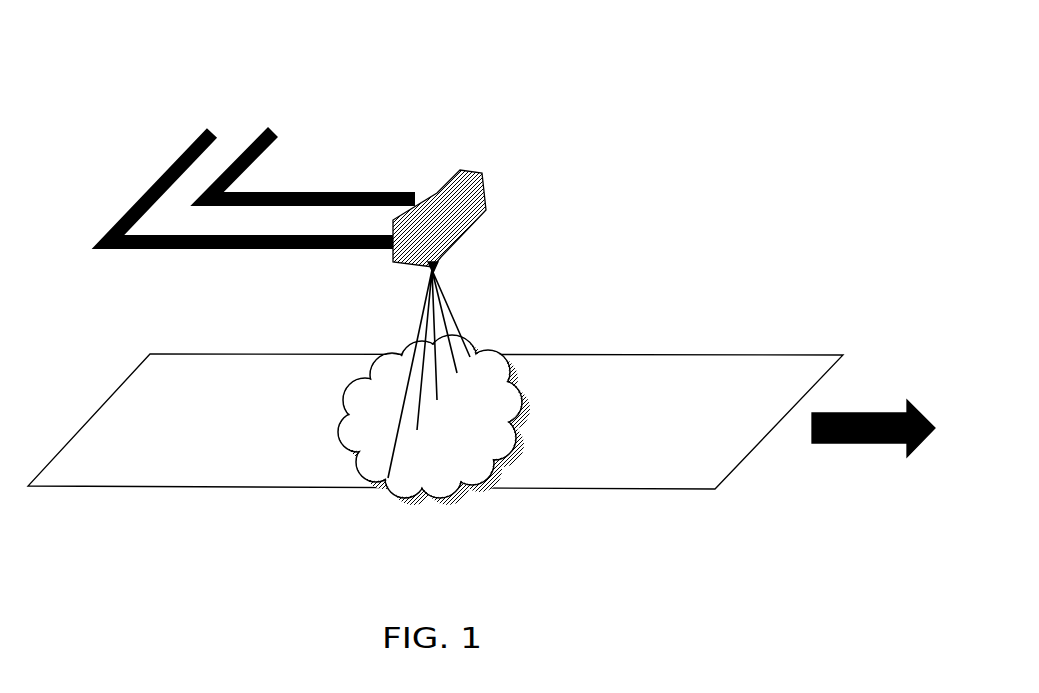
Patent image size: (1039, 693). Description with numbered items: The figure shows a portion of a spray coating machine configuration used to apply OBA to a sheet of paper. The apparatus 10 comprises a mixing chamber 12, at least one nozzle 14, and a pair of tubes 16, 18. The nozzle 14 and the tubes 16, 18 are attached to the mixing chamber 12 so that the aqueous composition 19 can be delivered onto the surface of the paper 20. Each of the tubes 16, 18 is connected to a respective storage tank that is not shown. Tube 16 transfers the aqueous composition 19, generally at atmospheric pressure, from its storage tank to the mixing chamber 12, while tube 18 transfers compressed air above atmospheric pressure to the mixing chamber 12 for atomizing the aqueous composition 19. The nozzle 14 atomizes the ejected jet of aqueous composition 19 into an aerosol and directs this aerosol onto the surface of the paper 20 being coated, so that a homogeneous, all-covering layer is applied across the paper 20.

The apparatus 10 is at (698, 167).
The mixing chamber 12 is at (468, 168).
The nozzle 14 is at (437, 263).
The tube 16 is at (155, 177).
The tube 18 is at (253, 143).
The aqueous composition 19 is at (457, 313).
The paper 20 is at (550, 370).